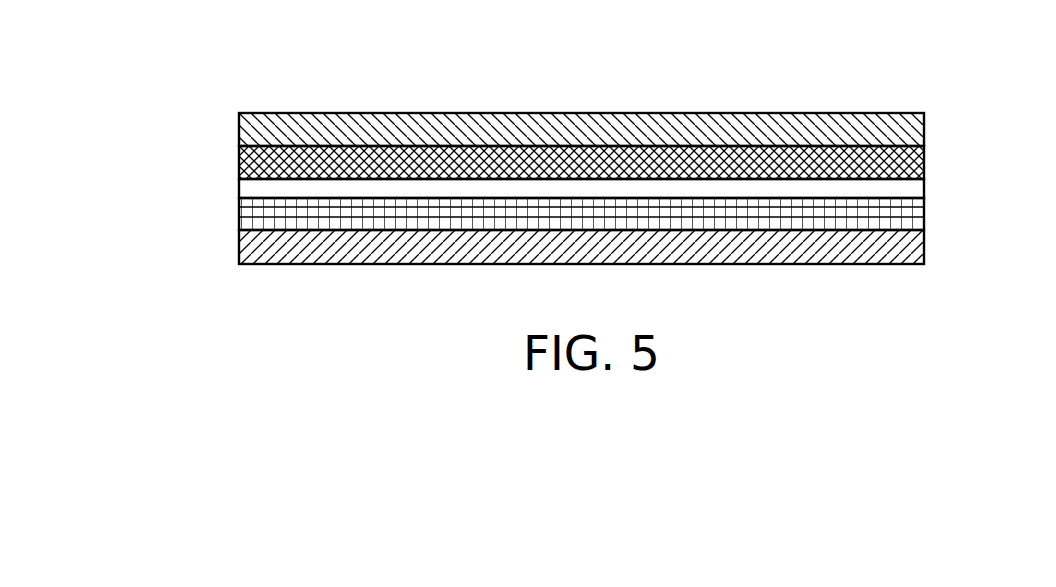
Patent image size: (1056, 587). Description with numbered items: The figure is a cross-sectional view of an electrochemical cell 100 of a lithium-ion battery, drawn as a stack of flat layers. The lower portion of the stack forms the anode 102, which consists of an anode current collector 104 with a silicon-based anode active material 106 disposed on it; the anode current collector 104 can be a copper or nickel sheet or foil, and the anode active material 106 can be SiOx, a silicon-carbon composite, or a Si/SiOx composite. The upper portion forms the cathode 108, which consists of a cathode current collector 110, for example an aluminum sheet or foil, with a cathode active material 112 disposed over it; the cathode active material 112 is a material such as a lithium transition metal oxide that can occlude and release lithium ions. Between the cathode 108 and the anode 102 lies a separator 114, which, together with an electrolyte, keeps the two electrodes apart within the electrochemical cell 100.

The electrochemical cell 100 is at (603, 157).
The anode 102 is at (576, 237).
The anode current collector 104 is at (915, 258).
The silicon-based anode active material 106 is at (915, 215).
The cathode 108 is at (576, 147).
The cathode current collector 110 is at (913, 122).
The cathode active material 112 is at (913, 170).
The separator 114 is at (912, 190).